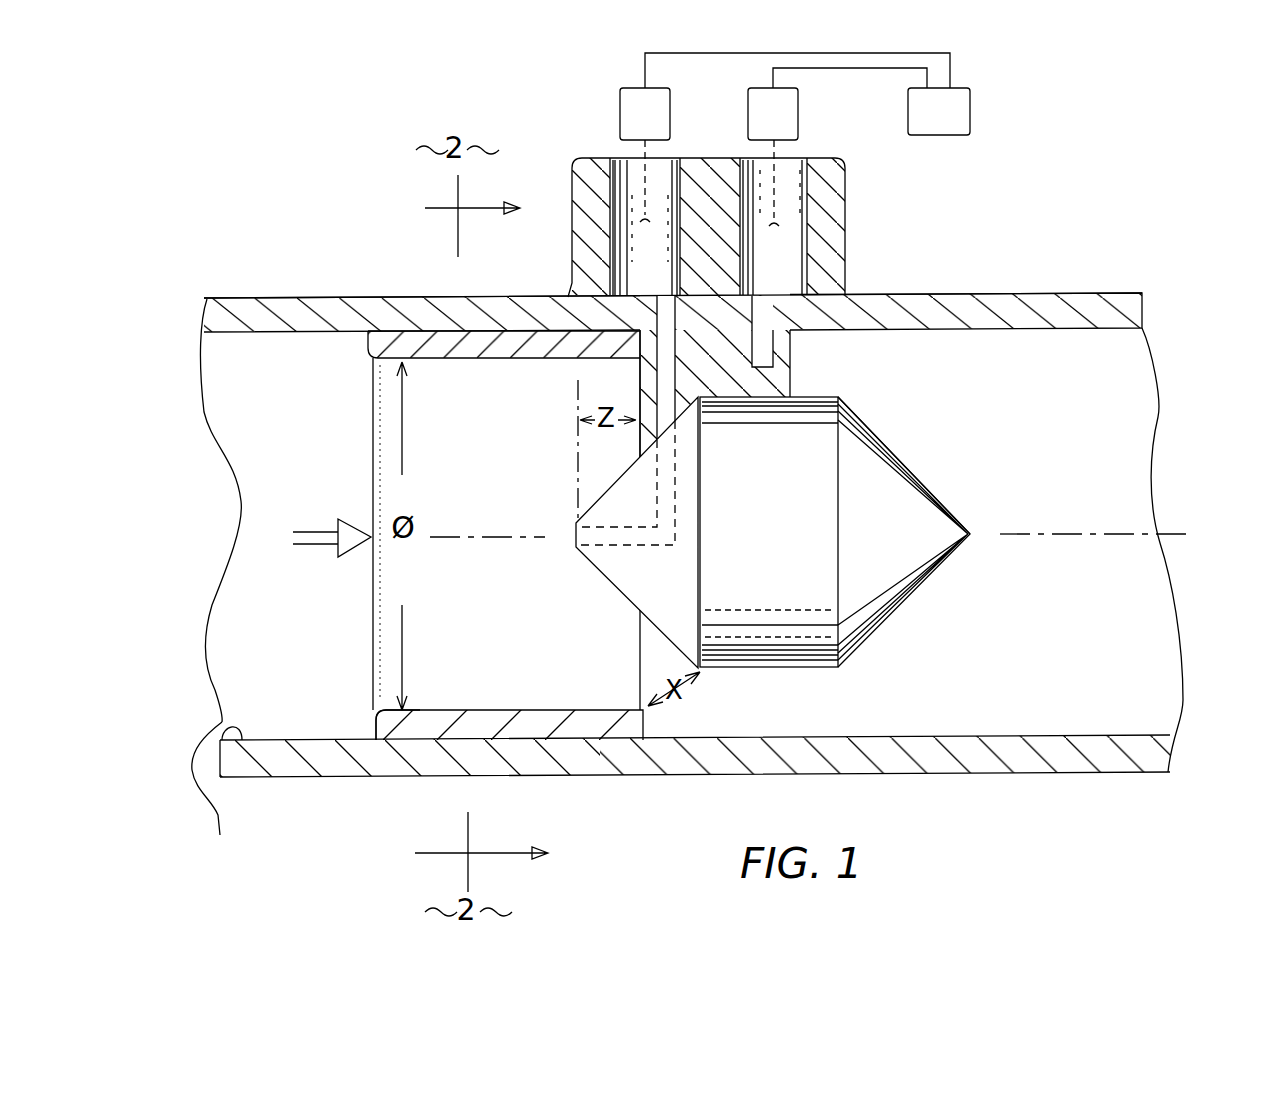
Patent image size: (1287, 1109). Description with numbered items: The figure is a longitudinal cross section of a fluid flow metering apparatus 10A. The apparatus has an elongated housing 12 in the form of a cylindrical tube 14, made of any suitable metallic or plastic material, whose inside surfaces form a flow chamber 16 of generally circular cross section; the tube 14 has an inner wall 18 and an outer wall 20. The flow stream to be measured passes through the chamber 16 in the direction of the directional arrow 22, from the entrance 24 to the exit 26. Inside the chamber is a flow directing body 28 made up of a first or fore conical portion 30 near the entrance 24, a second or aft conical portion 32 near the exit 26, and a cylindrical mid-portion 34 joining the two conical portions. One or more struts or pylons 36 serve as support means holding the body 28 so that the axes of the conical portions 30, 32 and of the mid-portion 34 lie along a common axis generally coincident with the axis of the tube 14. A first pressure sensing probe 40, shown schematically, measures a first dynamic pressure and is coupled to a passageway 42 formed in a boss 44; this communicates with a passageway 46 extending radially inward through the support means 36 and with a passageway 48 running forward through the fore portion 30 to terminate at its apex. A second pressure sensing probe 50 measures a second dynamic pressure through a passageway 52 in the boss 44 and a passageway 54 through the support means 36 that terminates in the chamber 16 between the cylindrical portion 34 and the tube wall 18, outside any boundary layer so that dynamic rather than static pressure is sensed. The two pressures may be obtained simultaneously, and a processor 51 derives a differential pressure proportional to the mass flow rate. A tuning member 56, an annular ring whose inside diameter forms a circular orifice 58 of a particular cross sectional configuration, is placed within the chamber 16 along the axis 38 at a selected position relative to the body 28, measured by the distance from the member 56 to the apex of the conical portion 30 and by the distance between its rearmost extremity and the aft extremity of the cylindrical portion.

The fluid flow metering apparatus 10A is at (905, 272).
The elongated housing 12 is at (276, 280).
The tube 14 is at (283, 760).
The flow chamber 16 is at (332, 352).
The inner wall 18 is at (220, 835).
The outer wall 20 is at (1040, 293).
The directional arrow 22 is at (345, 516).
The entrance 24 is at (251, 472).
The exit 26 is at (1135, 488).
The flow directing body 28 is at (910, 448).
The first or fore conical portion 30 is at (688, 624).
The second or aft conical portion 32 is at (870, 587).
The cylindrical or mid-portion 34 is at (830, 672).
The struts or pylons 36 is at (795, 372).
The axis 38 is at (1175, 534).
The first pressure sensing probe 40 is at (620, 124).
The passageway 42 is at (640, 276).
The boss 44 is at (835, 193).
The passageway 46 is at (660, 305).
The passageway 48 is at (585, 572).
The second pressure sensing probe 50 is at (800, 118).
The processor 51 is at (972, 112).
The passageway 52 is at (767, 180).
The passageway 54 is at (773, 297).
The tuning member 56 is at (550, 735).
The orifice 58 is at (452, 688).